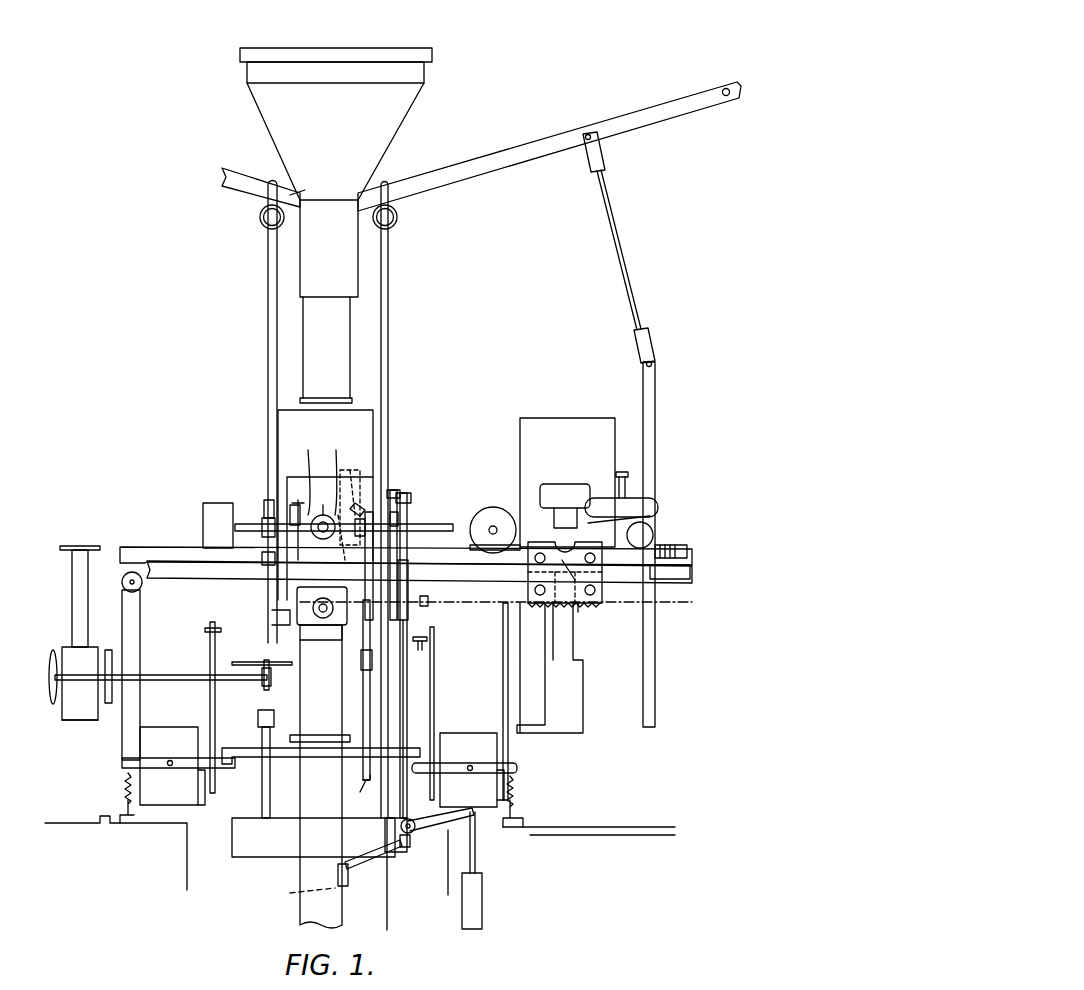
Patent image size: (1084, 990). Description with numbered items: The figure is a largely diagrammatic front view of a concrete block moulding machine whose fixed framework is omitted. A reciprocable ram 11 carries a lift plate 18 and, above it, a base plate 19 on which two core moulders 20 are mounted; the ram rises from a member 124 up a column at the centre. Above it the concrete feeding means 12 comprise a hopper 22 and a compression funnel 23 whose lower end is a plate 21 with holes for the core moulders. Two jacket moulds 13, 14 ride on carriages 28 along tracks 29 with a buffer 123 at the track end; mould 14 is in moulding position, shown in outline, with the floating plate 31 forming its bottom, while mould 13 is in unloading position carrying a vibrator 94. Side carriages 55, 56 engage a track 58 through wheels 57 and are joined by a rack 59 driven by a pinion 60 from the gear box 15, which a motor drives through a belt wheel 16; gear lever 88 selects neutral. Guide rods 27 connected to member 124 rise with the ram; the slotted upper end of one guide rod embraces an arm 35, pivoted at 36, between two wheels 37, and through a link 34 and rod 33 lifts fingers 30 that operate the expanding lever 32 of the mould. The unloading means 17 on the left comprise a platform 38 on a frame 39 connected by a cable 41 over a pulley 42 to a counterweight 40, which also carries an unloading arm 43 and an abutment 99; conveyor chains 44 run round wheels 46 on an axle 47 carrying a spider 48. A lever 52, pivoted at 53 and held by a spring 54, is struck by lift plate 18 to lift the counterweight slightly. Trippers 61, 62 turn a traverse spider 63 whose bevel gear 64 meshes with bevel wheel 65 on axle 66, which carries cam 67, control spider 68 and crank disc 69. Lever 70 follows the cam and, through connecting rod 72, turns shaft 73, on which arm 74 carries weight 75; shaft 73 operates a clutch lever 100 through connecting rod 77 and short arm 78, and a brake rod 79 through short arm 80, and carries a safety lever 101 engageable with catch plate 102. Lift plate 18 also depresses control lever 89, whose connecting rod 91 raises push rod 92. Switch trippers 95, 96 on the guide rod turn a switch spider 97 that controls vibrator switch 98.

The reciprocable ram 11 is at (330, 809).
The concrete feeding means 12 is at (336, 187).
The jacket mould 13 is at (560, 423).
The jacket mould 14 is at (285, 425).
The gear box 15 is at (272, 620).
The belt wheel 16 is at (300, 636).
The unloading means 17 is at (103, 630).
The lift plate 18 is at (242, 757).
The base plate 19 is at (296, 735).
The core moulders 20 is at (310, 664).
The plate 21 is at (303, 398).
The hopper 22 is at (268, 102).
The compression funnel 23 is at (296, 192).
The guide rod 27 is at (268, 276).
The carriage 28 is at (490, 520).
The track 29 is at (133, 548).
The fingers 30 is at (600, 498).
The floating plate 31 is at (340, 512).
The expanding lever 32 is at (620, 472).
The rod 33 is at (644, 406).
The link 34 is at (617, 250).
The arm 35 is at (240, 190).
The pivot 36 is at (722, 90).
The wheels 37 is at (388, 183).
The platform 38 is at (82, 546).
The frame 39 is at (98, 657).
The counterweight 40 is at (140, 738).
The cable 41 is at (122, 595).
The pulley 42 is at (140, 590).
The unloading arm 43 is at (210, 641).
The conveyor chains 44 is at (55, 704).
The wheels 46 is at (85, 722).
The axle 47 is at (172, 681).
The spider 48 is at (262, 685).
The lever 52 is at (205, 805).
The pivot 53 is at (170, 768).
The spring 54 is at (122, 800).
The side carriage 55 is at (580, 606).
The side carriage 56 is at (365, 472).
The wheels 57 is at (585, 603).
The track 58 is at (185, 561).
The rack 59 is at (490, 598).
The pinion 60 is at (297, 607).
The traverse tripper 61 is at (560, 558).
The traverse tripper 62 is at (358, 500).
The traverse spider 63 is at (308, 473).
The bevel gear wheel 64 is at (322, 505).
The bevel wheel 65 is at (338, 473).
The axle 66 is at (432, 524).
The cam 67 is at (398, 513).
The control spider 68 is at (370, 500).
The crank disc 69 is at (298, 500).
The lever 70 is at (397, 503).
The connecting rod 72 is at (408, 668).
The shaft 73 is at (414, 830).
The arm 74 is at (450, 822).
The weight 75 is at (482, 895).
The connecting rod 77 is at (364, 866).
The short arm 78 is at (408, 848).
The brake rod 79 is at (390, 888).
The short arm 80 is at (385, 840).
The gear lever 88 is at (290, 508).
The control lever 89 is at (359, 787).
The connecting rod 91 is at (363, 700).
The push rod 92 is at (400, 535).
The vibrator 94 is at (565, 485).
The switch tripper 95 is at (258, 718).
The switch tripper 96 is at (262, 560).
The switch spider 97 is at (264, 505).
The vibrator switch 98 is at (215, 503).
The abutment 99 is at (122, 763).
The clutch lever 100 is at (290, 893).
The safety lever 101 is at (408, 686).
The catch plate 102 is at (428, 604).
The buffer 123 is at (678, 545).
The member 124 is at (292, 849).